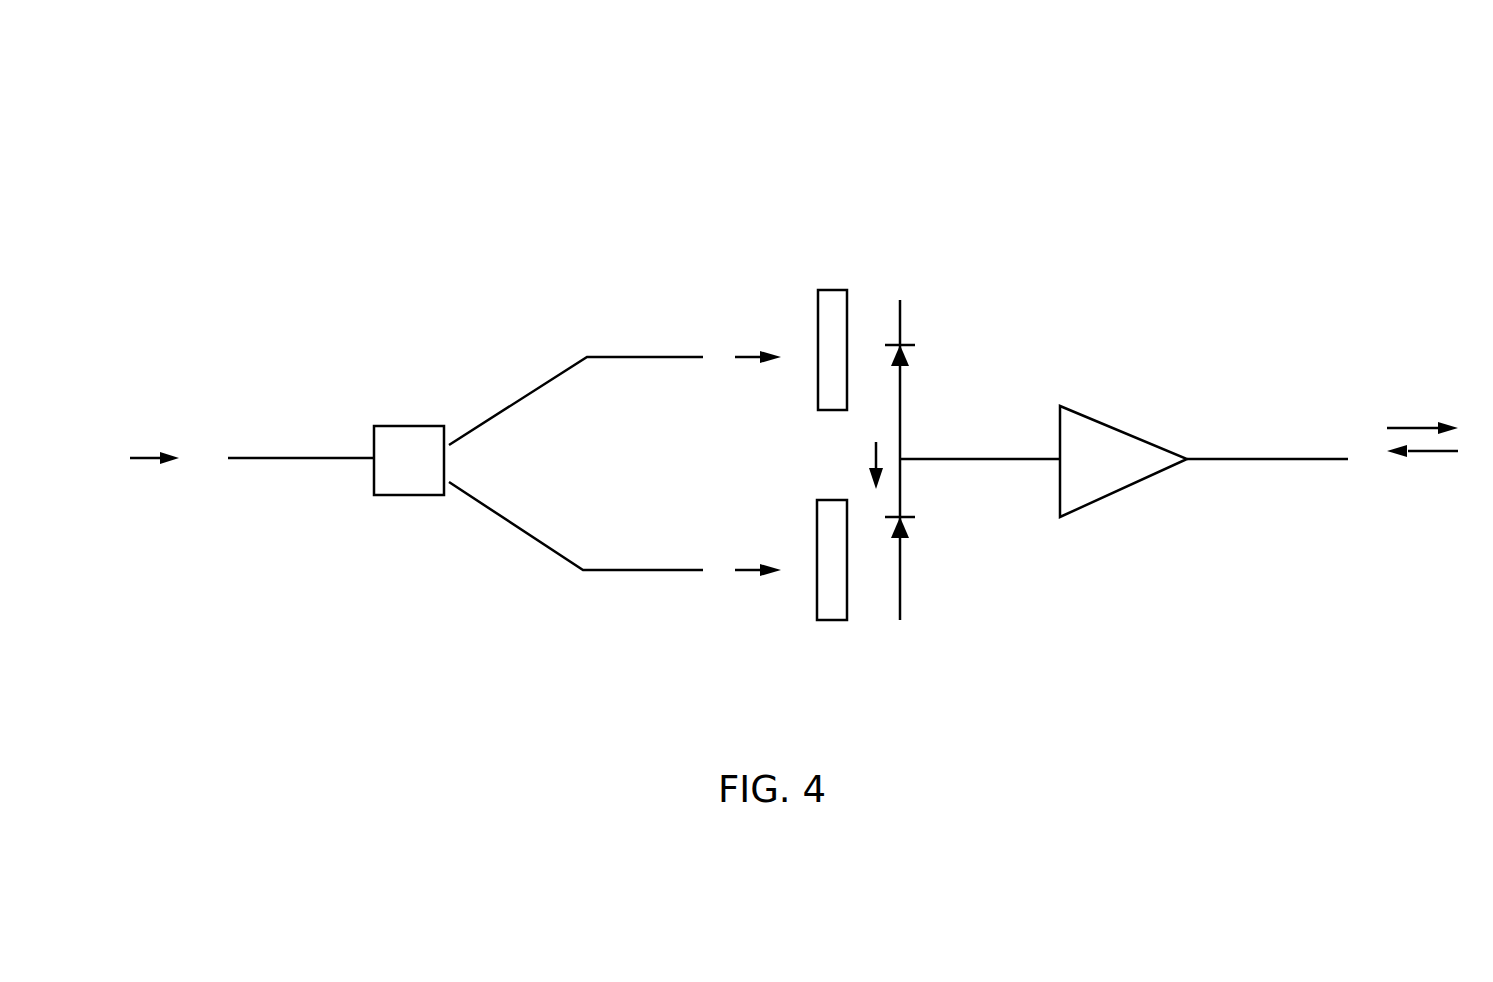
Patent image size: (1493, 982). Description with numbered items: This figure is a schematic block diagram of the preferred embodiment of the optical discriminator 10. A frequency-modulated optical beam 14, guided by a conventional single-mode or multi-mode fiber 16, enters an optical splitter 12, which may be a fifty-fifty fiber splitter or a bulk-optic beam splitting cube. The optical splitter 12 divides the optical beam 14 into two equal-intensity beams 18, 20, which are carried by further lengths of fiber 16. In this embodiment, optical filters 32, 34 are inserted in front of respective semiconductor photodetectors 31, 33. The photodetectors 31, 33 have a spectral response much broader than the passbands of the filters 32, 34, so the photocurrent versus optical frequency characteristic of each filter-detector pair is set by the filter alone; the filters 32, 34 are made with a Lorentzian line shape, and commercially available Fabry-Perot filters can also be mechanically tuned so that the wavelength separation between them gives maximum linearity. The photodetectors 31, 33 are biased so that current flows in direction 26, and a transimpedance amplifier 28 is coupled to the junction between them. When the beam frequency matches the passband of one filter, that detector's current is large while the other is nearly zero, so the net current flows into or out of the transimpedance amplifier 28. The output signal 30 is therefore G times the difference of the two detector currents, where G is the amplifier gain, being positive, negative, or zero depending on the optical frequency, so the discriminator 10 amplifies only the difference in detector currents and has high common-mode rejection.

The optical discriminator 10 is at (767, 165).
The optical splitter 12 is at (410, 425).
The frequency-modulated optical beam 14 is at (169, 454).
The fiber 16 is at (288, 461).
The first equal-intensity beam 18 is at (768, 350).
The second equal-intensity beam 20 is at (768, 578).
The current flow direction 26 is at (872, 452).
The transimpedance amplifier 28 is at (1133, 437).
The output signal 30 is at (1405, 412).
The first semiconductor photodetector 31 is at (890, 343).
The first optical filter 32 is at (832, 289).
The second semiconductor photodetector 33 is at (895, 619).
The second optical filter 34 is at (830, 621).